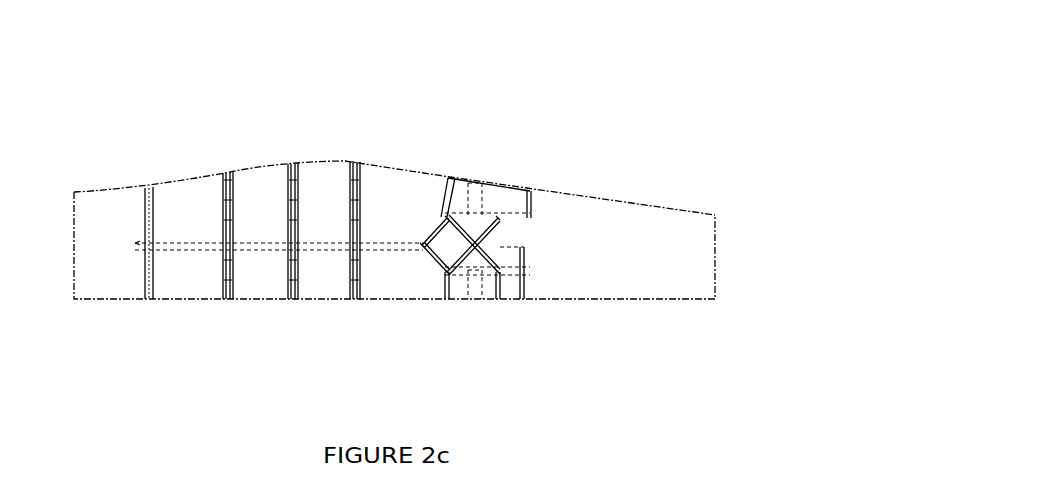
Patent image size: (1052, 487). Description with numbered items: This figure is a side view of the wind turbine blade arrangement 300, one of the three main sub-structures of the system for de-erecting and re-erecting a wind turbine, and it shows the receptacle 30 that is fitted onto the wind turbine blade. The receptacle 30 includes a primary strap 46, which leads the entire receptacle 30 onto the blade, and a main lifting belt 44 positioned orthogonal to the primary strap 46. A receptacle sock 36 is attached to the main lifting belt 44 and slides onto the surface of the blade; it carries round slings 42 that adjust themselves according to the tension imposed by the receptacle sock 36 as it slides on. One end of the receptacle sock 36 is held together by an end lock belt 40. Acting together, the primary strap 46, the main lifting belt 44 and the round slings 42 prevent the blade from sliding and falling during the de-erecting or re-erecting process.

The wind turbine blade arrangement 300 is at (697, 152).
The receptacle 30 is at (180, 95).
The primary strap 46 is at (152, 212).
The main lifting belt 44 is at (256, 227).
The receptacle sock 36 is at (479, 172).
The round slings 42 is at (492, 213).
The end lock belt 40 is at (528, 225).